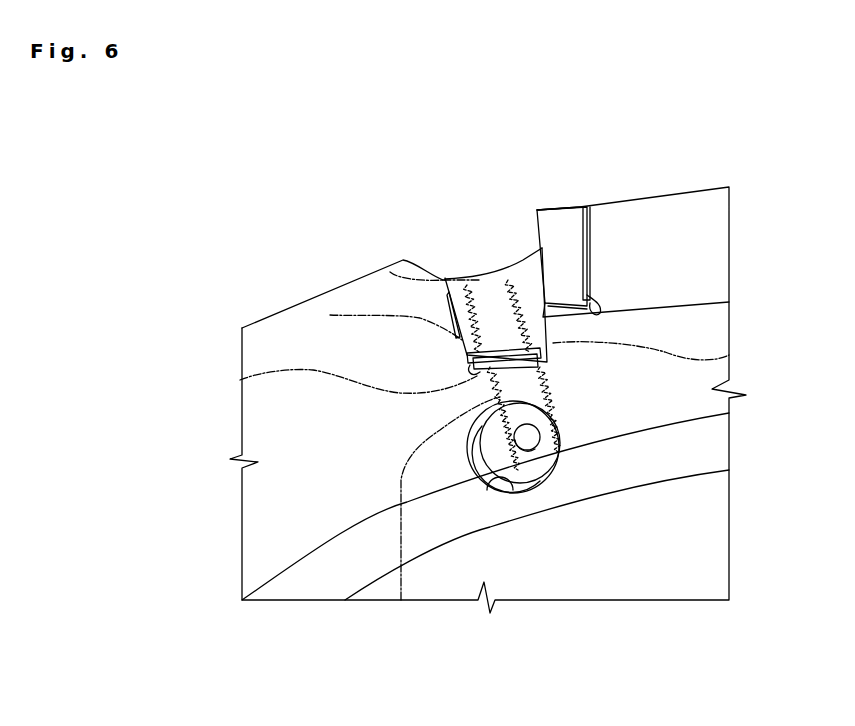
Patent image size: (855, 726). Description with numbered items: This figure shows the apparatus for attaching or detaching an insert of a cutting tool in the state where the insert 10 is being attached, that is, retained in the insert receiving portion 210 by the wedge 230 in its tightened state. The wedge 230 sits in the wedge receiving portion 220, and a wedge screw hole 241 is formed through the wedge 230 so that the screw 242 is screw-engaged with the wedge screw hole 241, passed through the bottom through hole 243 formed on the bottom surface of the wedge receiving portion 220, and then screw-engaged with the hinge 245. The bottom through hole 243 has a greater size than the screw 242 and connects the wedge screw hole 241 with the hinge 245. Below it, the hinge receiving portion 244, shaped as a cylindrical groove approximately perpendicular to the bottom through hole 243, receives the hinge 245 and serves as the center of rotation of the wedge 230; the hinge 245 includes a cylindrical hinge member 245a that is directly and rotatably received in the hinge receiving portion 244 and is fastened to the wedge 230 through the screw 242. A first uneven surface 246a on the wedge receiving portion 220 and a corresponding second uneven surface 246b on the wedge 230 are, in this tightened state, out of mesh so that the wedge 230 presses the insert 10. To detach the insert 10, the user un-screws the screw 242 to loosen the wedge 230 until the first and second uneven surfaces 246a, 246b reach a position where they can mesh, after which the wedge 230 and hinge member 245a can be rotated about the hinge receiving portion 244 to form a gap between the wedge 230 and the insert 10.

The insert 10 is at (575, 222).
The insert receiving portion 210 is at (586, 224).
The wedge receiving portion 220 is at (240, 380).
The wedge 230 is at (520, 262).
The wedge screw hole 241 is at (483, 277).
The screw 242 is at (729, 355).
The bottom through hole 243 is at (401, 600).
The hinge receiving portion 244 is at (513, 493).
The hinge 245 is at (560, 457).
The hinge member 245a is at (538, 448).
The first uneven surface 246a is at (390, 272).
The second uneven surface 246b is at (330, 315).